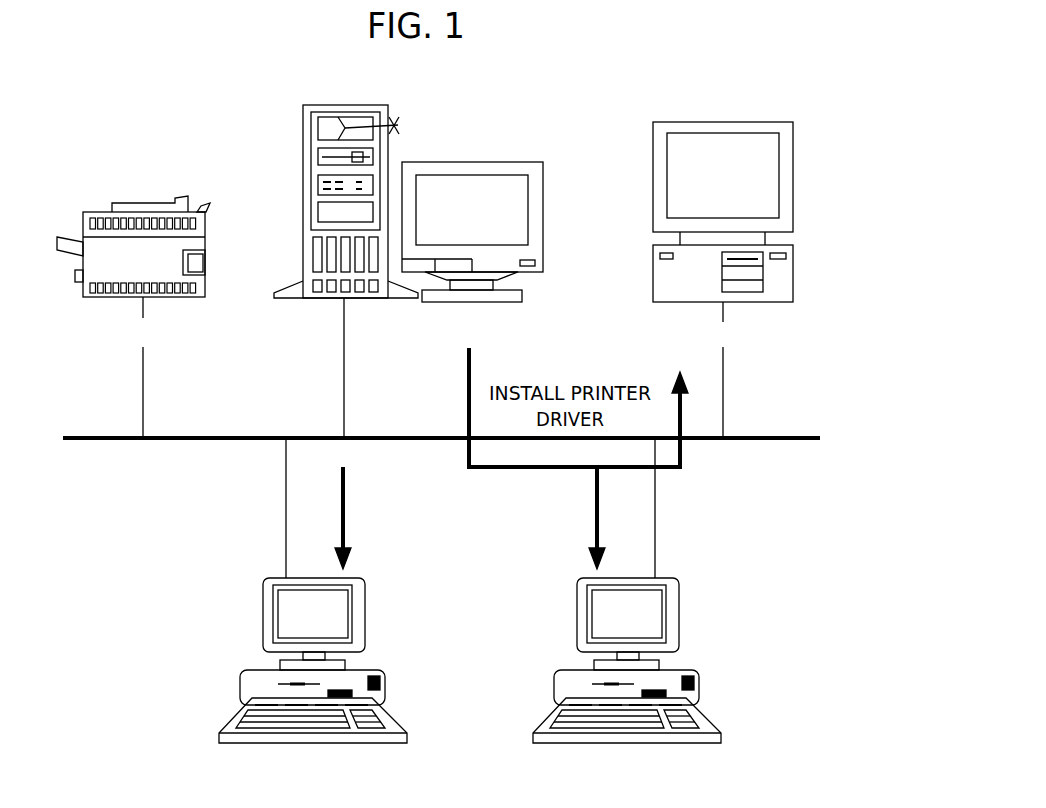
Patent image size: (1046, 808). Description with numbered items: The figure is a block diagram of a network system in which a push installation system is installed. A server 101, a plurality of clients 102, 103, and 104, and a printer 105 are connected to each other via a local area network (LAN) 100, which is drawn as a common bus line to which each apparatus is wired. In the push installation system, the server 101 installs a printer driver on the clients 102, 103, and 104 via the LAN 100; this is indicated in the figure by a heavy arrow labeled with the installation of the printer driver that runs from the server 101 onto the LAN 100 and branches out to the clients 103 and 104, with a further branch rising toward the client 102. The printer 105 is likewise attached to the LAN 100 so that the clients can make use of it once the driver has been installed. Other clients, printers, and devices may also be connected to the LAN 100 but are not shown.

The local area network 100 is at (203, 444).
The server 101 is at (467, 160).
The client 102 is at (722, 118).
The client 103 is at (356, 578).
The client 104 is at (670, 578).
The printer 105 is at (146, 201).